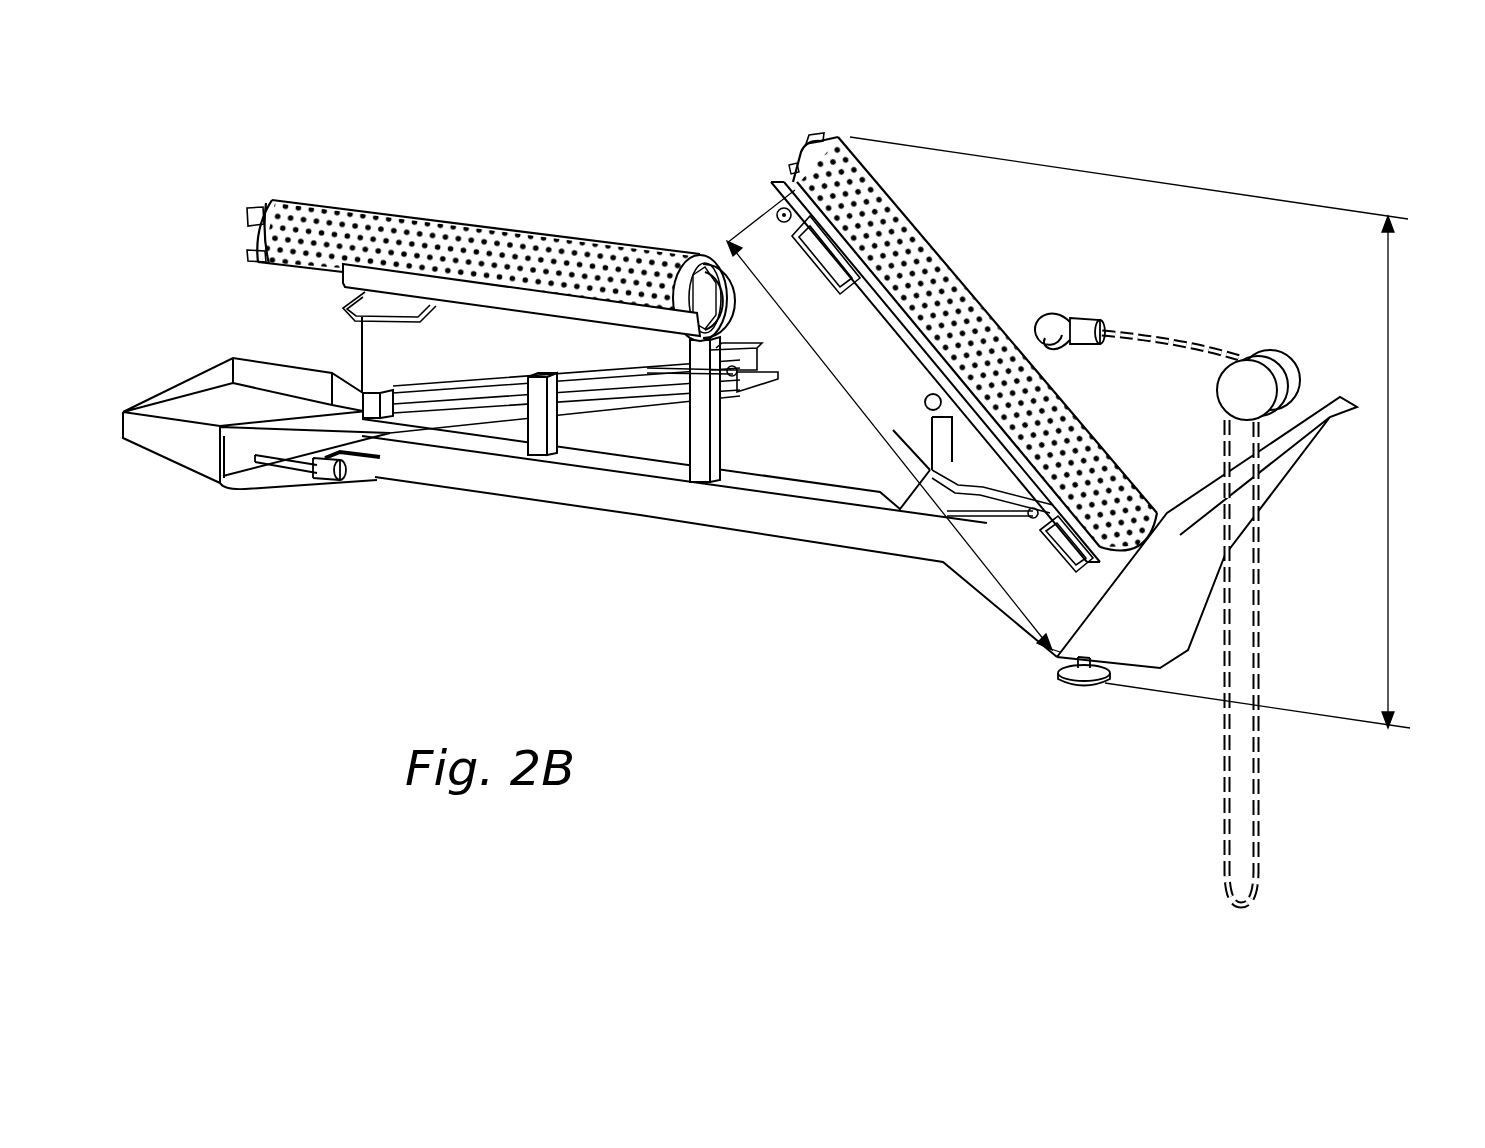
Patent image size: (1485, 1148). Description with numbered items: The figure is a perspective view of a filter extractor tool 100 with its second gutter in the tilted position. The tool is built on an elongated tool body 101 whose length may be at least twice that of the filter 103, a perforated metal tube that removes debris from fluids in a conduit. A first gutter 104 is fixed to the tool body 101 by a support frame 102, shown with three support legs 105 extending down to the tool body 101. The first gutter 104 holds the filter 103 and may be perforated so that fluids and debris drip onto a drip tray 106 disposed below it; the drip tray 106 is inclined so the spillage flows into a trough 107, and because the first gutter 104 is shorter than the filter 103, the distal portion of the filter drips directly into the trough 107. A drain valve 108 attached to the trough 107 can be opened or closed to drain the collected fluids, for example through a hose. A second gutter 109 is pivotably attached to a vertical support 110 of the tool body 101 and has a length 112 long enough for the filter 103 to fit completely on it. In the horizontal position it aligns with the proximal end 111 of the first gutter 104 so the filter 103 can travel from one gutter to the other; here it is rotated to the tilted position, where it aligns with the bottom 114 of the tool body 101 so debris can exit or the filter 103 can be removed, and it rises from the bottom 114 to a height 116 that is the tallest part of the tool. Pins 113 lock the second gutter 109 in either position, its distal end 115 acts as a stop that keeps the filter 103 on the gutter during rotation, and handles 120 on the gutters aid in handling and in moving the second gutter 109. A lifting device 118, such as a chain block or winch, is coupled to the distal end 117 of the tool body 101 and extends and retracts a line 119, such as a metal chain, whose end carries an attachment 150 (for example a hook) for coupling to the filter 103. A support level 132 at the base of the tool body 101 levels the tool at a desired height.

The filter extractor tool 100 is at (1336, 114).
The tool body 101 is at (778, 528).
The support frame 102 is at (362, 341).
The filter 103 is at (465, 222).
The first gutter 104 is at (522, 303).
The support legs 105 is at (373, 397).
The drip tray 106 is at (583, 408).
The trough 107 is at (185, 380).
The drain valve 108 is at (330, 475).
The second gutter 109 is at (927, 347).
The vertical support 110 is at (937, 433).
The proximal end 111 is at (677, 323).
The length 112 is at (880, 432).
The pins 113 is at (705, 382).
The bottom 114 is at (1046, 651).
The distal end 115 is at (1128, 568).
The height 116 is at (1393, 458).
The distal end 117 is at (1320, 486).
The lifting device 118 is at (1275, 355).
The line 119 is at (1158, 332).
The handles 120 is at (343, 301).
The support level 132 is at (1084, 690).
The attachment 150 is at (1064, 308).